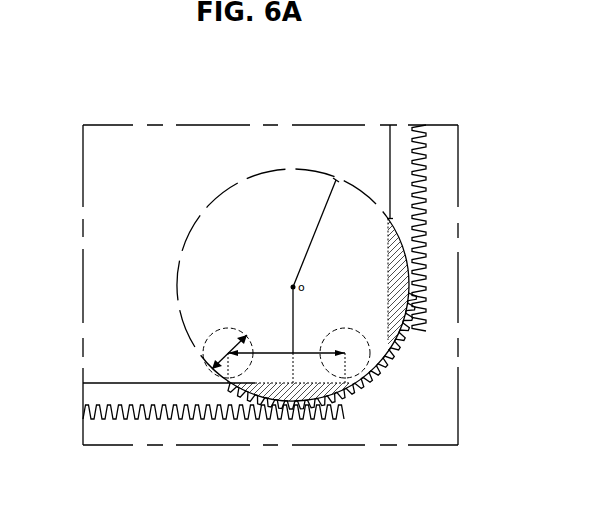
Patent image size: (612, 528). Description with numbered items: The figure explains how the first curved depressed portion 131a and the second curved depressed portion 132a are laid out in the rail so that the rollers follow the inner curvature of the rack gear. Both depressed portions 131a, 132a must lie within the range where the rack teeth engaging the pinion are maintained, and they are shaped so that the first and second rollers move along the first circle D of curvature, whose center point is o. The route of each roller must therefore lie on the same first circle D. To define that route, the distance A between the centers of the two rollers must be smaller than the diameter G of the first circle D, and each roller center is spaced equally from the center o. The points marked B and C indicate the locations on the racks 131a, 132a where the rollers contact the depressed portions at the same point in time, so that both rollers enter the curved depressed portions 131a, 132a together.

The first curved depressed portion 131a is at (413, 309).
The second curved depressed portion 132a is at (266, 420).
The first circle of curvature D is at (234, 180).
The diameter of the first circle of curvature G is at (315, 234).
The distance between the centers of the first and second rollers A is at (286, 346).
The meshing point B is at (382, 340).
The meshing point C is at (204, 352).